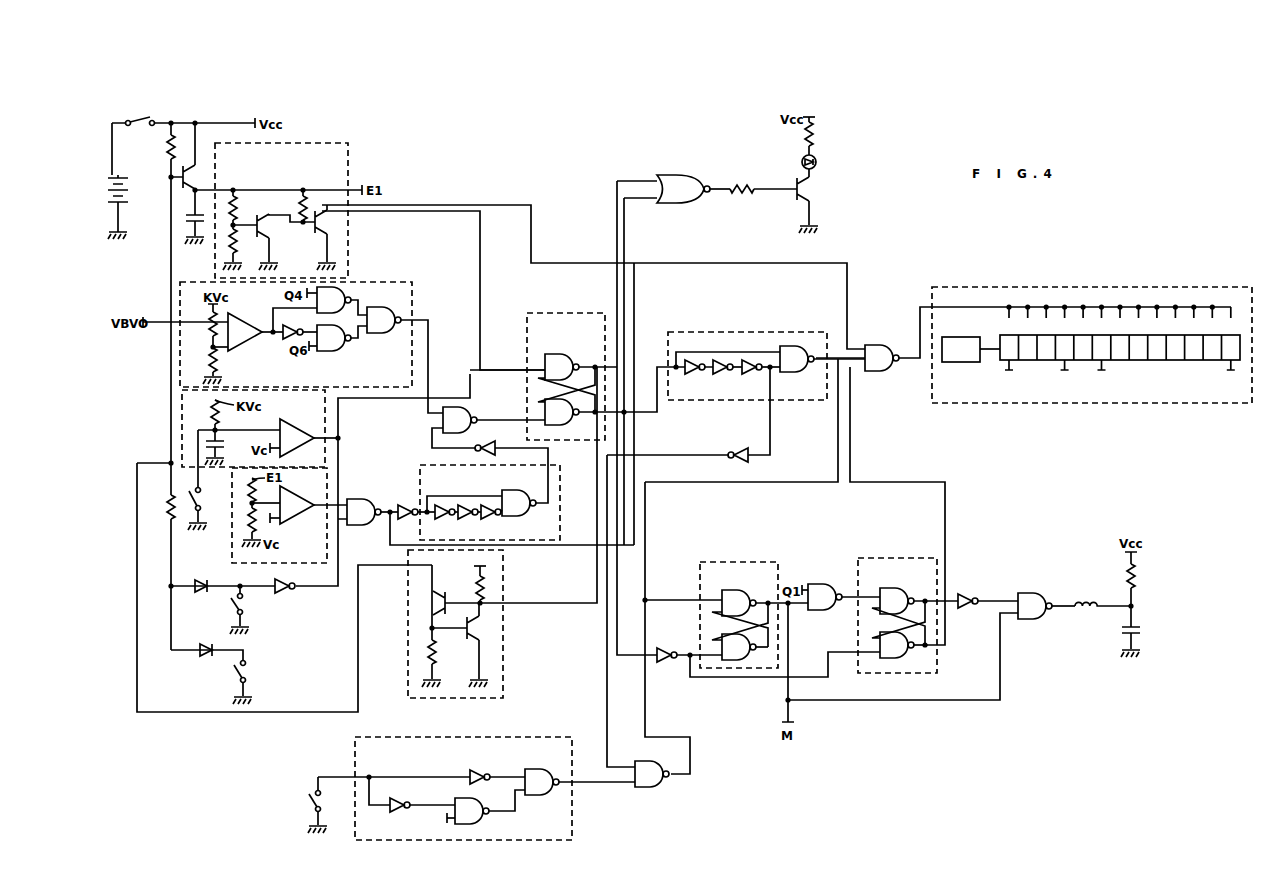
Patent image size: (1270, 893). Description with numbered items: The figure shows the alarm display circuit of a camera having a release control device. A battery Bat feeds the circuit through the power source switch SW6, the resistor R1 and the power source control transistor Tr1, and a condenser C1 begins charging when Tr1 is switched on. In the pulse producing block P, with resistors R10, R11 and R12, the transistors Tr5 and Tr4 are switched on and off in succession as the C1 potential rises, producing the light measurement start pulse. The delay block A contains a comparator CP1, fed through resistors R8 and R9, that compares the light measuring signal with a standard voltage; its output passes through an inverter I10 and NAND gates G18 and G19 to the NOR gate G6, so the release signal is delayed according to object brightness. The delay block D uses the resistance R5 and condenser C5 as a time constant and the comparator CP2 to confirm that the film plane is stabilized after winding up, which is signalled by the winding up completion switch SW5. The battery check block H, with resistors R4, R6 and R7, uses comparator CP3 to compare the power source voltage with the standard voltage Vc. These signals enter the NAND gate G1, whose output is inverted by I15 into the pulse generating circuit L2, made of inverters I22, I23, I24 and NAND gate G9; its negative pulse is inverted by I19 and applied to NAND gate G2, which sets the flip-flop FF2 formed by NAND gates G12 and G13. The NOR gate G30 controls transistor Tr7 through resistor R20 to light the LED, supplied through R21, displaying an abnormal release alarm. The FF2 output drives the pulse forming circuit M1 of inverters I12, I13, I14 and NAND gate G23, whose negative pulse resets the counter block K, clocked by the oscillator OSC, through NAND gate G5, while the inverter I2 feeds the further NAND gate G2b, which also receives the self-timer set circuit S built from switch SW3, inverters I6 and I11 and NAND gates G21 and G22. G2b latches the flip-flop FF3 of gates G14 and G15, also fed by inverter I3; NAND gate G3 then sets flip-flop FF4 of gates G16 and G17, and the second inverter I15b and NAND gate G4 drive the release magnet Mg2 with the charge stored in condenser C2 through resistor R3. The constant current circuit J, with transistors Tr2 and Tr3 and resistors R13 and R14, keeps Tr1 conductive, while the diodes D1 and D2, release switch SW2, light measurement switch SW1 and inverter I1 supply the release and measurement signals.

The battery Bat is at (104, 207).
The power source switch SW6 is at (143, 131).
The resistor R1 is at (164, 150).
The power source control transistor Tr1 is at (194, 156).
The condenser C1 is at (189, 217).
The pulse signal producing circuit P is at (281, 210).
The resistor R10 is at (248, 207).
The resistor R11 is at (245, 247).
The resistor R12 is at (319, 206).
The transistor Tr4 is at (268, 242).
The transistor Tr5 is at (325, 237).
The delay circuit A is at (296, 334).
The resistor R8 is at (205, 329).
The resistor R9 is at (207, 366).
The comparator CP1 is at (240, 319).
The inverter I10 is at (284, 341).
The NAND gate G18 is at (342, 301).
The NAND gate G19 is at (342, 338).
The NOR gate G6 is at (405, 360).
The delay circuit D is at (253, 428).
The resistance R5 is at (225, 415).
The condenser C5 is at (224, 447).
The comparator CP2 is at (288, 420).
The battery check circuit H is at (279, 515).
The winding up completion switch SW5 is at (210, 509).
The resistor R4 is at (162, 507).
The resistor R6 is at (244, 490).
The resistor R7 is at (247, 525).
The comparator CP3 is at (300, 503).
The NAND gate G1 is at (372, 512).
The inverter I15 is at (414, 503).
The pulse generating circuit L2 is at (490, 502).
The inverter I22 is at (443, 524).
The inverter I23 is at (467, 524).
The inverter I24 is at (490, 524).
The NAND gate G9 is at (521, 482).
The inverter I19 is at (473, 441).
The NAND gate G2 is at (494, 420).
The flip-flop FF2 is at (601, 376).
The NAND gate G12 is at (581, 367).
The NAND gate G13 is at (610, 396).
The NOR gate G30 is at (693, 189).
The resistor R20 is at (763, 181).
The transistor Tr7 is at (816, 201).
The element LED is at (824, 162).
The resistor R21 is at (823, 136).
The pulse forming circuit M1 is at (766, 359).
The inverter I12 is at (694, 378).
The inverter I13 is at (725, 378).
The inverter I14 is at (758, 378).
The NAND gate G23 is at (822, 359).
The inverter I2 is at (738, 447).
The NAND gate G5 is at (1048, 339).
The sequence control counter K is at (1092, 345).
The clock pulse generator OSC is at (971, 349).
The flip-flop FF3 is at (754, 615).
The NAND gate G14 is at (765, 603).
The NAND gate G15 is at (745, 647).
The inverter I3 is at (688, 646).
The NAND gate G3 is at (844, 597).
The flip-flop FF4 is at (908, 615).
The NAND gate G16 is at (919, 601).
The NAND gate G17 is at (904, 645).
The inverter I15b is at (988, 594).
The NAND gate G4 is at (1046, 606).
The release magnet Mg2 is at (1101, 594).
The resistor R3 is at (1140, 579).
The condenser C2 is at (1139, 631).
The constant current circuit J is at (455, 624).
The transistor Tr2 is at (445, 603).
The resistor R13 is at (469, 584).
The transistor Tr3 is at (467, 645).
The resistor R14 is at (442, 663).
The diode D1 is at (200, 579).
The release switch SW2 is at (252, 610).
The inverter I1 is at (285, 594).
The diode D2 is at (208, 643).
The light measurement switch SW1 is at (256, 683).
The self-timer switch SW3 is at (330, 805).
The start circuit block S is at (495, 788).
The inverter I6 is at (497, 769).
The inverter I11 is at (400, 803).
The NAND gate G21 is at (490, 807).
The NAND gate G22 is at (580, 782).
The NAND gate G2b is at (652, 774).